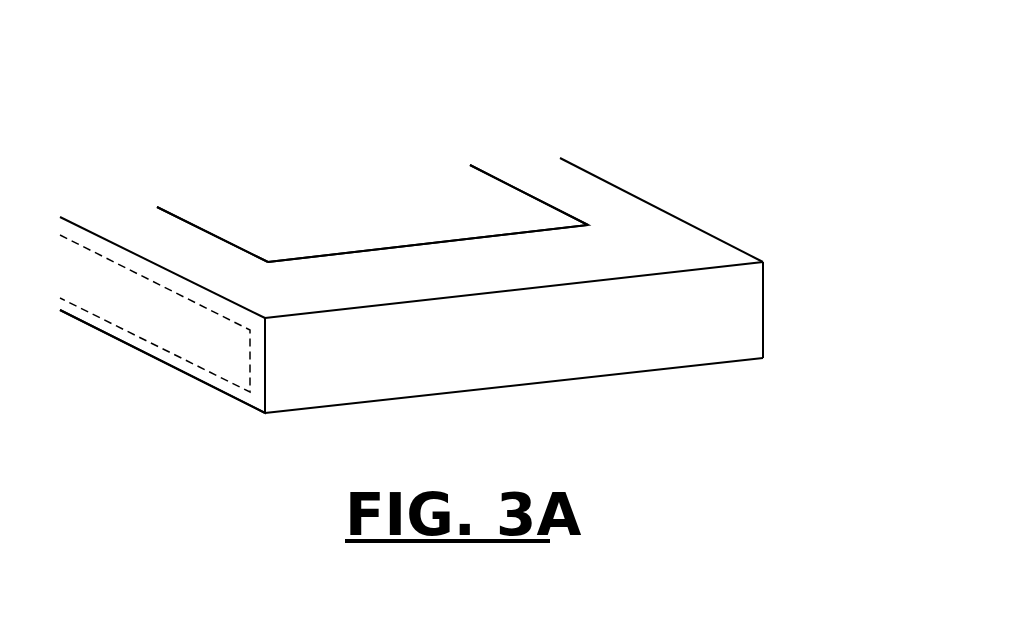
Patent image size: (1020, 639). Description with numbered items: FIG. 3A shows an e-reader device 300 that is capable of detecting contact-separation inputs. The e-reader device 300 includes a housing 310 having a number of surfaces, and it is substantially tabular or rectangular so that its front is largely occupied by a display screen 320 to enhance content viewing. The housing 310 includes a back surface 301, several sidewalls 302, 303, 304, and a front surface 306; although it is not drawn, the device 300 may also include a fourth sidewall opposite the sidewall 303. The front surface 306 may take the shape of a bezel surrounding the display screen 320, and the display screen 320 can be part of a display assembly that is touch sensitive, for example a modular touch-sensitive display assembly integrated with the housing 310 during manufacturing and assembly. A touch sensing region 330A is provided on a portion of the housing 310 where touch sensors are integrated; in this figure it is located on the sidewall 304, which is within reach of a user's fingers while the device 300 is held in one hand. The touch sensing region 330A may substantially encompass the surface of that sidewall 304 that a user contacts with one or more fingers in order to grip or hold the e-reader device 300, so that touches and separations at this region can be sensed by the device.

The e-reader device 300 is at (451, 246).
The housing 310 is at (115, 197).
The display screen 320 is at (355, 218).
The touch sensing region 330A is at (130, 321).
The sidewall 304 is at (180, 367).
The back surface 301 is at (308, 433).
The sidewall 302 is at (775, 295).
The sidewall 303 is at (553, 365).
The front surface 306 is at (635, 215).